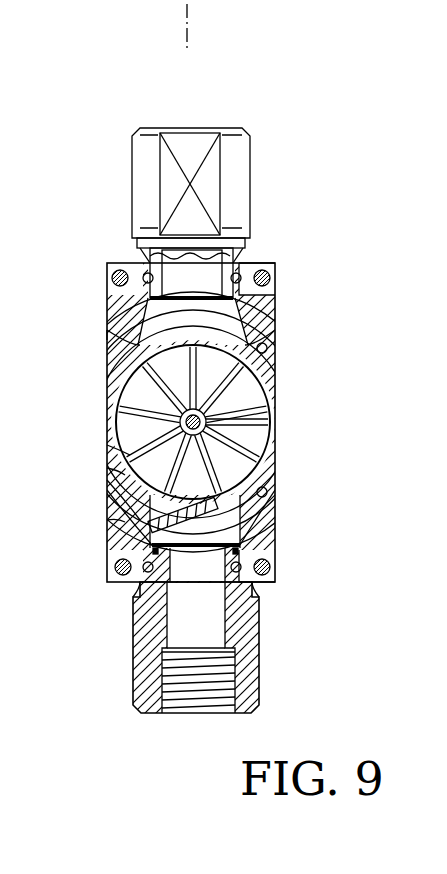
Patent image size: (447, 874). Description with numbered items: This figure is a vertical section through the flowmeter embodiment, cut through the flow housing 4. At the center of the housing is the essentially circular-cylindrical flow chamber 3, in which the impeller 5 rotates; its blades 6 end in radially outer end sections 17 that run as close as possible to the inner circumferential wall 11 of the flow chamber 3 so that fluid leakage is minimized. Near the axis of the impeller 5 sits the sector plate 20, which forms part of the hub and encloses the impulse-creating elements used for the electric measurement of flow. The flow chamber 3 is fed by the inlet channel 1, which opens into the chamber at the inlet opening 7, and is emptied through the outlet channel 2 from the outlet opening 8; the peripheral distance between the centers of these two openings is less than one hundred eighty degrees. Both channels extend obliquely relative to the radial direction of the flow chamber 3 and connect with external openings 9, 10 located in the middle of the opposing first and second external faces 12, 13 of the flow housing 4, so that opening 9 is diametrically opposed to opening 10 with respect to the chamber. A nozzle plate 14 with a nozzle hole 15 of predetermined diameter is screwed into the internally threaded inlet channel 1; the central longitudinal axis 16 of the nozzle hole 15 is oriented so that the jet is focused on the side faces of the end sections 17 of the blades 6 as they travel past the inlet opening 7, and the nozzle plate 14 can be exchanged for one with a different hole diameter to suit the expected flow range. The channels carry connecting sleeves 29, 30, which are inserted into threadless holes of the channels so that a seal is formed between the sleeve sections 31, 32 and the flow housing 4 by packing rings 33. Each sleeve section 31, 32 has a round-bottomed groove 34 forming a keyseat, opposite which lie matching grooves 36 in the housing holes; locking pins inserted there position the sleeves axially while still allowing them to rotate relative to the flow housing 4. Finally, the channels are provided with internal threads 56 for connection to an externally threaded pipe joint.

The inlet channel 1 is at (108, 522).
The outlet channel 2 is at (180, 423).
The flow chamber 3 is at (195, 423).
The flow housing 4 is at (262, 312).
The impeller 5 is at (231, 422).
The blades 6 is at (263, 448).
The inlet opening 7 is at (110, 472).
The outlet opening 8 is at (107, 335).
The external opening 9 is at (180, 565).
The external opening 10 is at (175, 255).
The inner circumferential wall 11 is at (262, 342).
The first external face 12 is at (270, 586).
The second external face 13 is at (255, 262).
The nozzle plate 14 is at (263, 518).
The nozzle hole 15 is at (262, 534).
The central longitudinal axis 16 is at (108, 490).
The radially outer end sections 17 is at (130, 452).
The sector plate 20 is at (218, 433).
The connecting sleeve 29 is at (169, 675).
The connecting sleeve 30 is at (248, 164).
The sleeve section 31 is at (137, 604).
The sleeve section 32 is at (172, 300).
The packing rings 33 is at (112, 285).
The groove 34 is at (128, 268).
The grooves 36 is at (275, 288).
The internal threads 56 is at (173, 710).